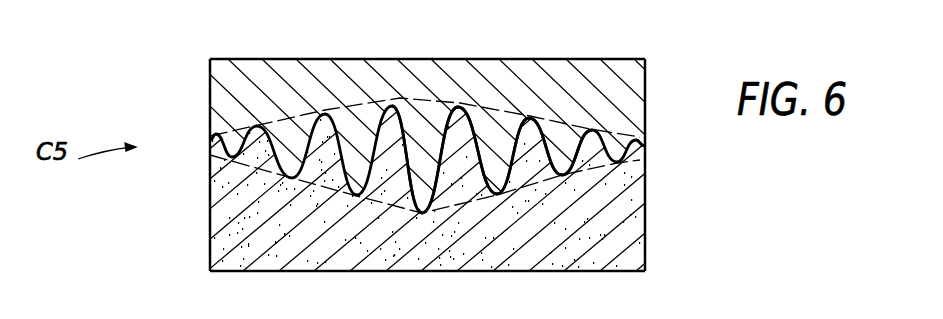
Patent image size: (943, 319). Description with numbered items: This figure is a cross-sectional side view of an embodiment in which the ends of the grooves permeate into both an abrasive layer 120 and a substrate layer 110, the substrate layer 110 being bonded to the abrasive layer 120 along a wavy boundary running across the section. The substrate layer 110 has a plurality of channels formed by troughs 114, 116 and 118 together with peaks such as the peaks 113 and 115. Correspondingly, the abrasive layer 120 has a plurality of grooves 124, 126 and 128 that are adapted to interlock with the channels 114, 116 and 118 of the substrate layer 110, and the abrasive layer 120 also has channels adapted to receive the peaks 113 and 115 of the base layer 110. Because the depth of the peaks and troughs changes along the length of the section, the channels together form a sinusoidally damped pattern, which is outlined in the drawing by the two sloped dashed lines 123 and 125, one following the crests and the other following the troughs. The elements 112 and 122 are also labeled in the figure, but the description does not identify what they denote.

The substrate layer 110 is at (222, 198).
The bottom surface of first layer 112 is at (267, 273).
The peak 113 is at (645, 157).
The trough 114 is at (471, 108).
The peak 115 is at (562, 170).
The trough 116 is at (502, 198).
The trough 118 is at (441, 208).
The abrasive layer 120 is at (223, 91).
The top surface of second layer 122 is at (300, 58).
The sloped dashed line 123 is at (298, 192).
The sloped dashed line 125 is at (354, 98).
The groove 124 is at (556, 146).
The groove 126 is at (491, 192).
The groove 128 is at (401, 203).